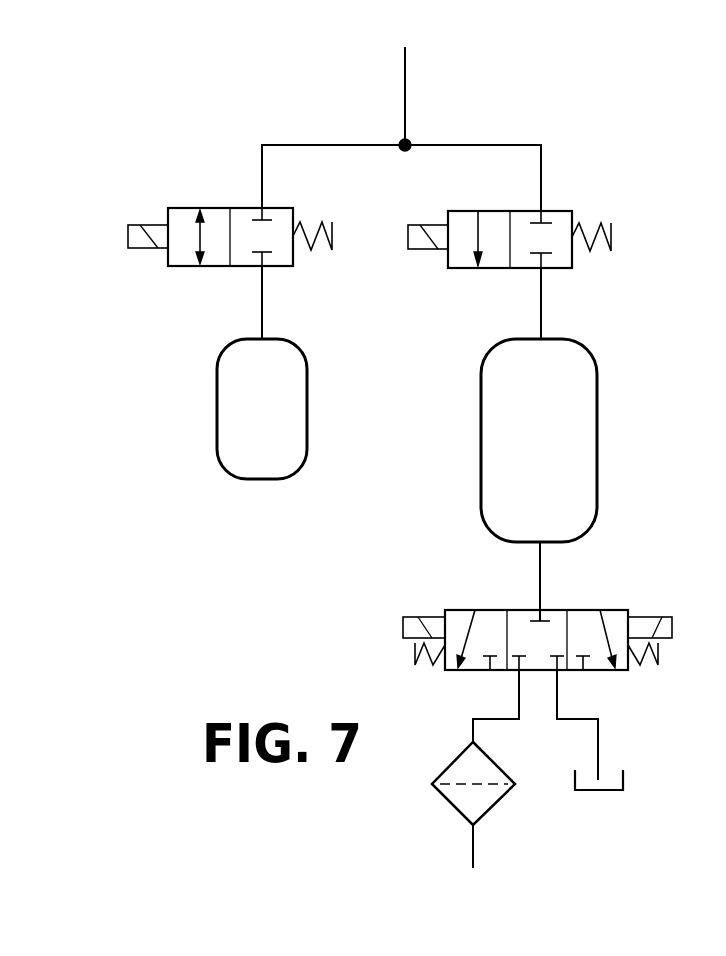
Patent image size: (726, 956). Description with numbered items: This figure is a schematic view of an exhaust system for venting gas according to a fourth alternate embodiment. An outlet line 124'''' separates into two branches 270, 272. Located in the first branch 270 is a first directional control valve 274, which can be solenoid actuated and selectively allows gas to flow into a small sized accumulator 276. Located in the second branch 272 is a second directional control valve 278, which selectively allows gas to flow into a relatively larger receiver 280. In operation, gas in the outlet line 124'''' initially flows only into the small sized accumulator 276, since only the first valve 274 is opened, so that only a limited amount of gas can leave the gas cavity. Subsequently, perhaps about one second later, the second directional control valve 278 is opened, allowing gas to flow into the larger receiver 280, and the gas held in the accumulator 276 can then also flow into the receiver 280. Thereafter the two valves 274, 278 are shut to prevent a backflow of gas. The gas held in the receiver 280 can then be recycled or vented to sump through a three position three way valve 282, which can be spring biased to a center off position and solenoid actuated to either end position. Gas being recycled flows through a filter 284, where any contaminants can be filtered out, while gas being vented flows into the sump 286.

The outlet line 124'''' is at (468, 95).
The first branch 270 is at (350, 145).
The second branch 272 is at (445, 145).
The first directional control valve 274 is at (180, 268).
The small sized accumulator 276 is at (217, 404).
The second directional control valve 278 is at (462, 270).
The receiver 280 is at (597, 426).
The three position three way valve 282 is at (495, 610).
The filter 284 is at (470, 800).
The sump 286 is at (593, 792).